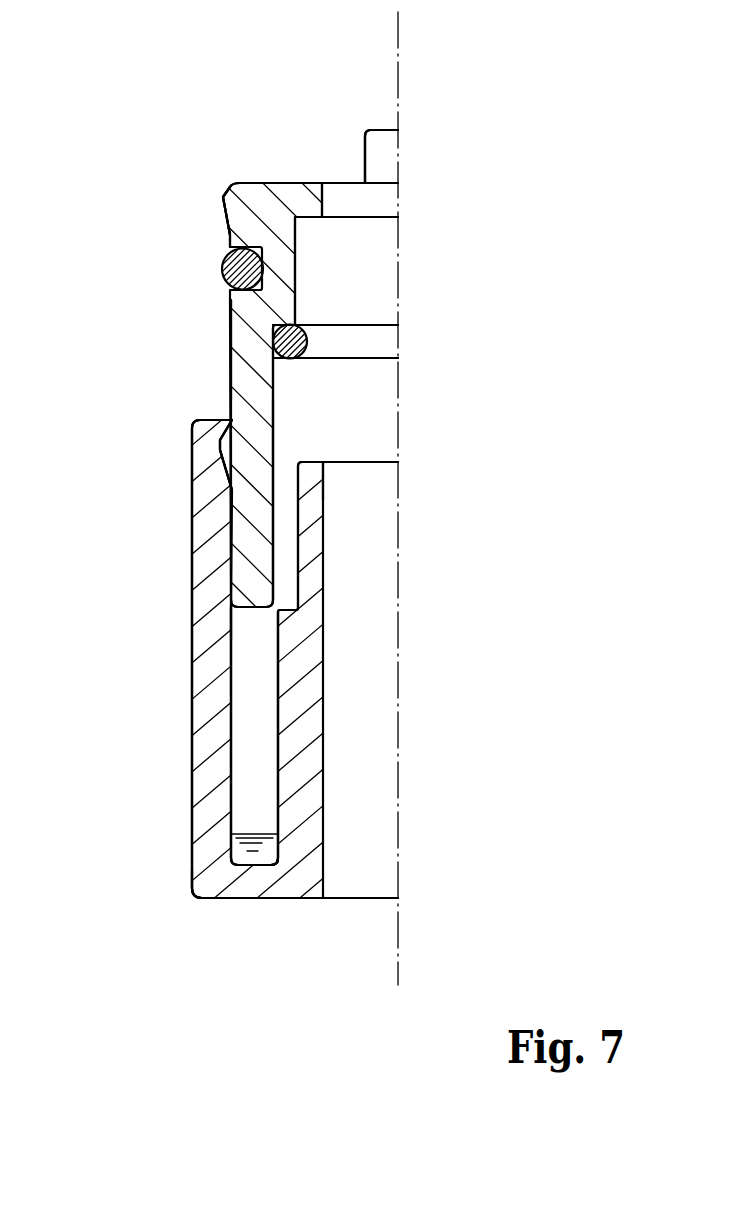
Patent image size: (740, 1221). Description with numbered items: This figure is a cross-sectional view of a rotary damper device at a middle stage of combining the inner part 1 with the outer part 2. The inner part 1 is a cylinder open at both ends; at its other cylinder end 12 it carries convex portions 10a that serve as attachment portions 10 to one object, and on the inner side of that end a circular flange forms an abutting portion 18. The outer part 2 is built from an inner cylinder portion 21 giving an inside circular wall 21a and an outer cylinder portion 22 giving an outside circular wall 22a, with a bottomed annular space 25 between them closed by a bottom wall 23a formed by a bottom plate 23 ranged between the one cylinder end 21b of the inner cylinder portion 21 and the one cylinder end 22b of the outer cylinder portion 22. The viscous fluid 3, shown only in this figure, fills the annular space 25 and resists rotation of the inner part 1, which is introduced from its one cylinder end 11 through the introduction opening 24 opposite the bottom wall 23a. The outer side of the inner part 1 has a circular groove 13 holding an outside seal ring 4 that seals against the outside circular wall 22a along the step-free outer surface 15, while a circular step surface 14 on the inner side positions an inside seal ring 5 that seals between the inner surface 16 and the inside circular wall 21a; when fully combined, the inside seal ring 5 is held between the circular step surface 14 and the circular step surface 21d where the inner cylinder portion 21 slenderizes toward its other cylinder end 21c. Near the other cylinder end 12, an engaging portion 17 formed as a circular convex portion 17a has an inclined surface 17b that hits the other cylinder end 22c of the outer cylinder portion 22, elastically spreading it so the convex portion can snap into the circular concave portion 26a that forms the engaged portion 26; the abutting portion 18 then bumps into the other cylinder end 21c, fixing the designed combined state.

The inner part 1 is at (277, 187).
The attachment portion 10 is at (380, 132).
The convex portion 10a is at (380, 132).
The other cylinder end 12 is at (250, 182).
The abutting portion 18 is at (337, 192).
The engaging portion 17 is at (225, 202).
The circular convex portion 17a is at (225, 202).
The inclined surface 17b is at (228, 231).
The outside seal ring 4 is at (222, 272).
The circular groove 13 is at (268, 267).
The circular step surface 14 is at (295, 307).
The inside seal ring 5 is at (327, 347).
The outer surface 15 is at (230, 363).
The inner surface 16 is at (275, 417).
The inner cylinder portion 21 is at (315, 747).
The outer cylinder portion 22 is at (196, 568).
The outer part 2 is at (197, 752).
The other cylinder end 22c is at (197, 418).
The engaged portion 26 is at (221, 446).
The circular concave portion 26a is at (221, 446).
The one cylinder end 11 is at (231, 626).
The outside circular wall 22a is at (230, 687).
The one cylinder end 22b is at (190, 897).
The other cylinder end 21c is at (362, 463).
The introduction opening 24 is at (282, 470).
The circular step surface 21d is at (298, 620).
The inside circular wall 21a is at (278, 672).
The annular space 25 is at (258, 787).
The viscous fluid 3 is at (245, 868).
The bottom plate 23 is at (245, 896).
The bottom wall 23a is at (260, 868).
The one cylinder end 21b is at (357, 902).